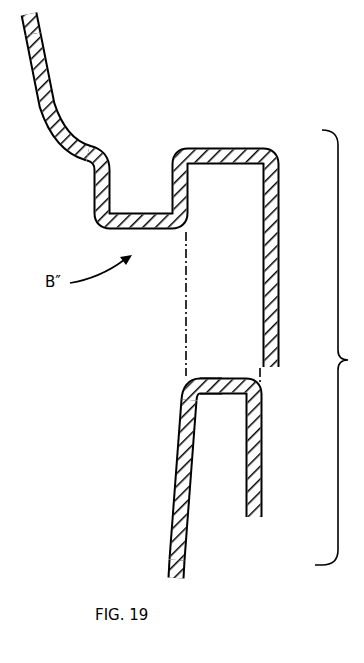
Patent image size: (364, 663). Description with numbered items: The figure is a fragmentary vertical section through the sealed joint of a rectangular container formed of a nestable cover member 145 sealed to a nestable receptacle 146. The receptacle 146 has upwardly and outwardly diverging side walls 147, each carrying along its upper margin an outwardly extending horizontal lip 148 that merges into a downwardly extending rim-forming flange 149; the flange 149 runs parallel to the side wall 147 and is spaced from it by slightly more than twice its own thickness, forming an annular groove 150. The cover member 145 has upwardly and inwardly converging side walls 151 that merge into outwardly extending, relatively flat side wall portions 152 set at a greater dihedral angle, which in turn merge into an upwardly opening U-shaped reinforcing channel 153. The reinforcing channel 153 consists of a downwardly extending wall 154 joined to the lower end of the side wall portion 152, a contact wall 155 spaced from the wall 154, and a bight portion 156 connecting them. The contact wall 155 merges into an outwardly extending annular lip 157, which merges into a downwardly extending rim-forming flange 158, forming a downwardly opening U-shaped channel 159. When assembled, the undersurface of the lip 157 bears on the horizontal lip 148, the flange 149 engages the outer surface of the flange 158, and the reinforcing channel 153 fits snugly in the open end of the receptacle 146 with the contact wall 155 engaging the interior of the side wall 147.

The cover member 145 is at (56, 93).
The receptacle 146 is at (181, 489).
The side wall 147 is at (182, 572).
The horizontal lip 148 is at (207, 378).
The rim-forming flange 149 is at (262, 447).
The annular groove 150 is at (223, 410).
The side wall 151 is at (40, 34).
The side wall portion 152 is at (97, 152).
The reinforcing channel 153 is at (137, 187).
The downwardly extending wall 154 is at (96, 164).
The contact wall 155 is at (174, 165).
The bight portion 156 is at (118, 227).
The annular lip 157 is at (222, 147).
The rim-forming flange 158 is at (282, 226).
The U-shaped channel 159 is at (227, 183).